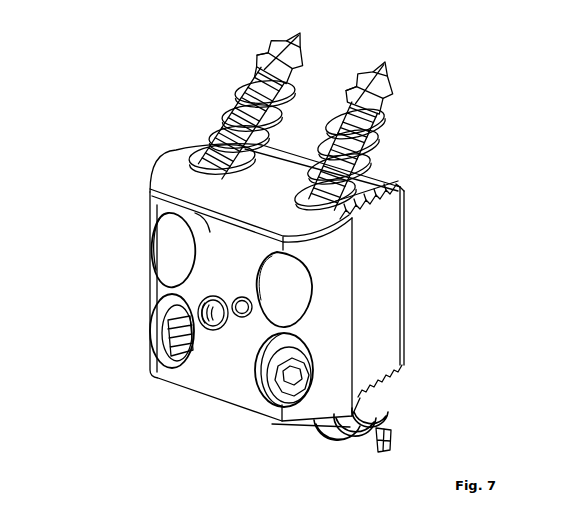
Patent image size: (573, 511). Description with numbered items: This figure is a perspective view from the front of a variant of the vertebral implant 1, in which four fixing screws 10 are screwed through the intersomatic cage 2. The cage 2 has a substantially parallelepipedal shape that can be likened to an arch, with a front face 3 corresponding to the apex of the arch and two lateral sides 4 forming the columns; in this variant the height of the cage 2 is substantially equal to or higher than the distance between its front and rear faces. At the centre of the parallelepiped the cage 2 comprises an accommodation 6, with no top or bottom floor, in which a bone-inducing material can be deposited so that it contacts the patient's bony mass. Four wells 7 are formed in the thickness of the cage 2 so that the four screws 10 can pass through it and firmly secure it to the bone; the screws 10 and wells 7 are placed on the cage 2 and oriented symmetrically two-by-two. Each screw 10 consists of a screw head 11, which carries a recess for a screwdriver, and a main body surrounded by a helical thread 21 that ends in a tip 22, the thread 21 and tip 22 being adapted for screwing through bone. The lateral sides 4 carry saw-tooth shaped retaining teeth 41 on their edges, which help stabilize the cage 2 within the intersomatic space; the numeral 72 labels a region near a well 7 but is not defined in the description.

The vertebral implant 1 is at (113, 85).
The intersomatic cage 2 is at (380, 343).
The front face 3 is at (153, 223).
The lateral sides 4 is at (383, 305).
The accommodation 6 is at (284, 172).
The wells 7 is at (170, 228).
The fixing screw 10 is at (402, 123).
The screw head 11 is at (170, 353).
The helical thread 21 is at (380, 156).
The tip 22 is at (388, 63).
The retaining teeth 41 is at (380, 186).
The hole rim 72 is at (153, 257).